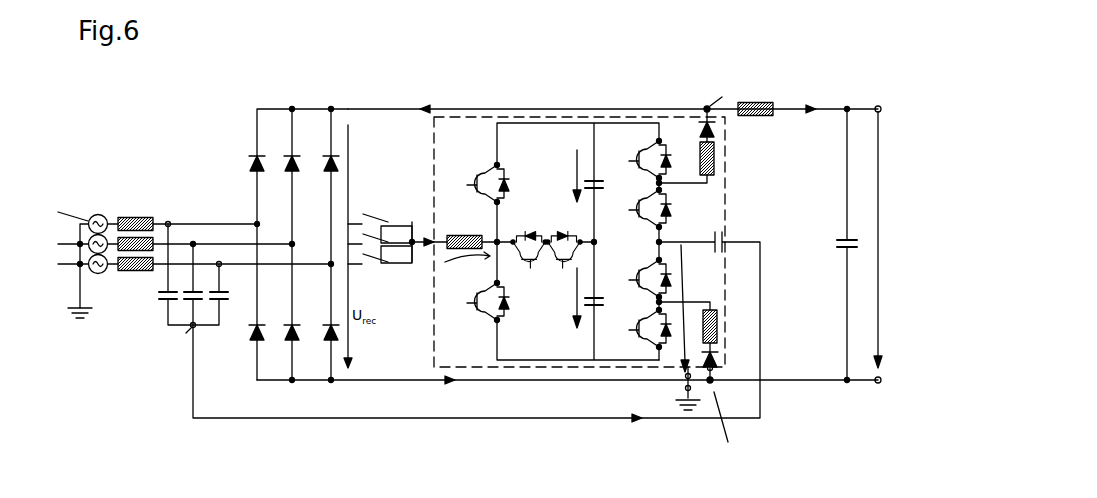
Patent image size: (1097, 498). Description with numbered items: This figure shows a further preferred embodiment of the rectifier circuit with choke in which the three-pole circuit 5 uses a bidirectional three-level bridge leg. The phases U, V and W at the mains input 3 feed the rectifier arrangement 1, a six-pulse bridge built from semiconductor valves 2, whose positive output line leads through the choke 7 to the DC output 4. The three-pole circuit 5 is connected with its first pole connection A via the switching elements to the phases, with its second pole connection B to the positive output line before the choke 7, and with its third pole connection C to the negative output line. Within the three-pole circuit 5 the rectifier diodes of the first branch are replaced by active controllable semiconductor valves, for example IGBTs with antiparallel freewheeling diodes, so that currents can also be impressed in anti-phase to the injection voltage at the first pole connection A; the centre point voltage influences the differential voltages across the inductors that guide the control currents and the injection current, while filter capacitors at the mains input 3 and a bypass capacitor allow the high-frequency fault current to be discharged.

The rectifier arrangement 1 is at (342, 85).
The semiconductor valve 2 is at (250, 158).
The mains input 3 is at (250, 183).
The DC output 4 is at (873, 80).
The three-pole circuit 5 is at (430, 147).
The choke 7 is at (762, 101).